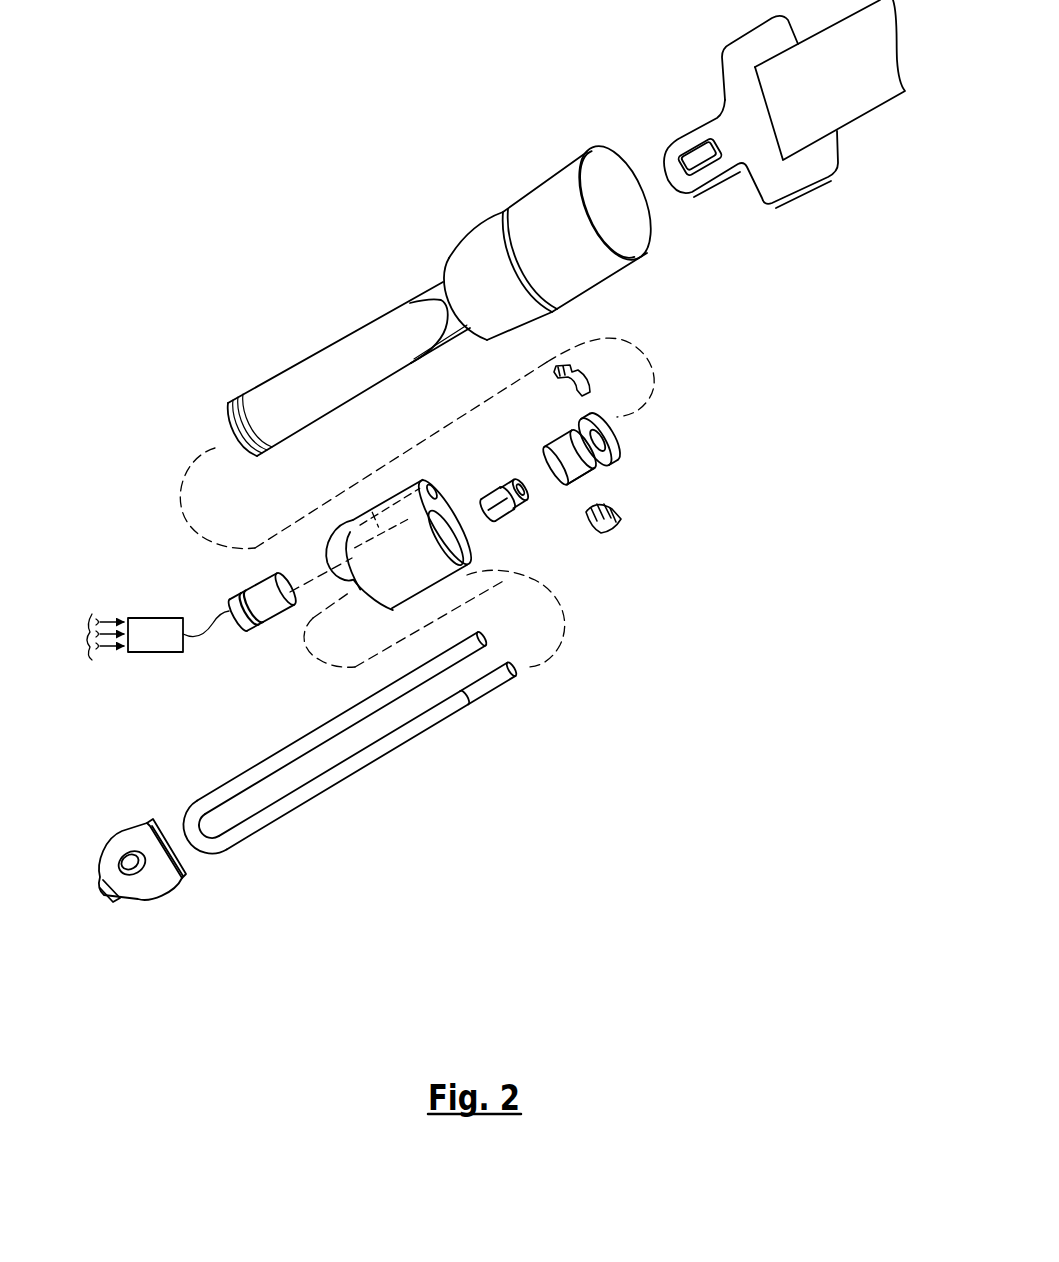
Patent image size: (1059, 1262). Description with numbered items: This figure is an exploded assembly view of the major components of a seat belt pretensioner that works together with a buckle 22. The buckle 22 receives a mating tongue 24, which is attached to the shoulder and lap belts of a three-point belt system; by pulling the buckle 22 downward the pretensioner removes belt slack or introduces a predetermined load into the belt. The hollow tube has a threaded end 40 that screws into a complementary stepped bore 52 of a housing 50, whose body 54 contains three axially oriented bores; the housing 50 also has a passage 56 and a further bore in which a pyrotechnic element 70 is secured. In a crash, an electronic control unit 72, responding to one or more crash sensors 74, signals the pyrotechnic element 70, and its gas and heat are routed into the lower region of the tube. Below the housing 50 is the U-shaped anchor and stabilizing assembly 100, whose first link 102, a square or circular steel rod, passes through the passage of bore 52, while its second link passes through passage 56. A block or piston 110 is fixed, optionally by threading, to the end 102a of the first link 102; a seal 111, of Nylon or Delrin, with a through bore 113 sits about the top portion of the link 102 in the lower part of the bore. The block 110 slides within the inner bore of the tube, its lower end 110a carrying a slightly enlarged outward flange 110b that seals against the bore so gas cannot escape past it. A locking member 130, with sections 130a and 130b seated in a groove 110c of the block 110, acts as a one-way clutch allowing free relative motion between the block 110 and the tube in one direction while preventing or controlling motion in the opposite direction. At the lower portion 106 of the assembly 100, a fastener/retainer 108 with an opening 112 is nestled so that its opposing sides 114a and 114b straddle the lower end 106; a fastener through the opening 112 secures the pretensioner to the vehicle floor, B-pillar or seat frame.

The buckle 22 is at (472, 204).
The mating tongue 24 is at (812, 200).
The threaded end of the tube 40 is at (253, 397).
The housing 50 is at (328, 535).
The stepped bore 52 is at (450, 538).
The body 54 is at (350, 532).
The passage 56 is at (371, 513).
The pyrotechnic element 70 is at (231, 628).
The electronic control unit 72 is at (155, 650).
The crash sensors 74 is at (88, 637).
The anchor and stabilizing assembly 100 is at (377, 767).
The first link 102 is at (389, 740).
The end of the first link 102a is at (515, 683).
The lower portion of the assembly 106 is at (230, 845).
The fastener/retainer 108 is at (161, 882).
The block or piston 110 is at (622, 467).
The lower end of the block 110a is at (553, 440).
The outward flange 110b is at (558, 488).
The groove 110c is at (606, 460).
The seal 111 is at (502, 484).
The opening 112 is at (126, 852).
The through bore 113 is at (532, 482).
The opposing side of the retainer 114a is at (140, 823).
The opposing side of the retainer 114b is at (175, 860).
The locking member 130 is at (641, 473).
The locking member section 130a is at (628, 517).
The locking member section 130b is at (592, 384).